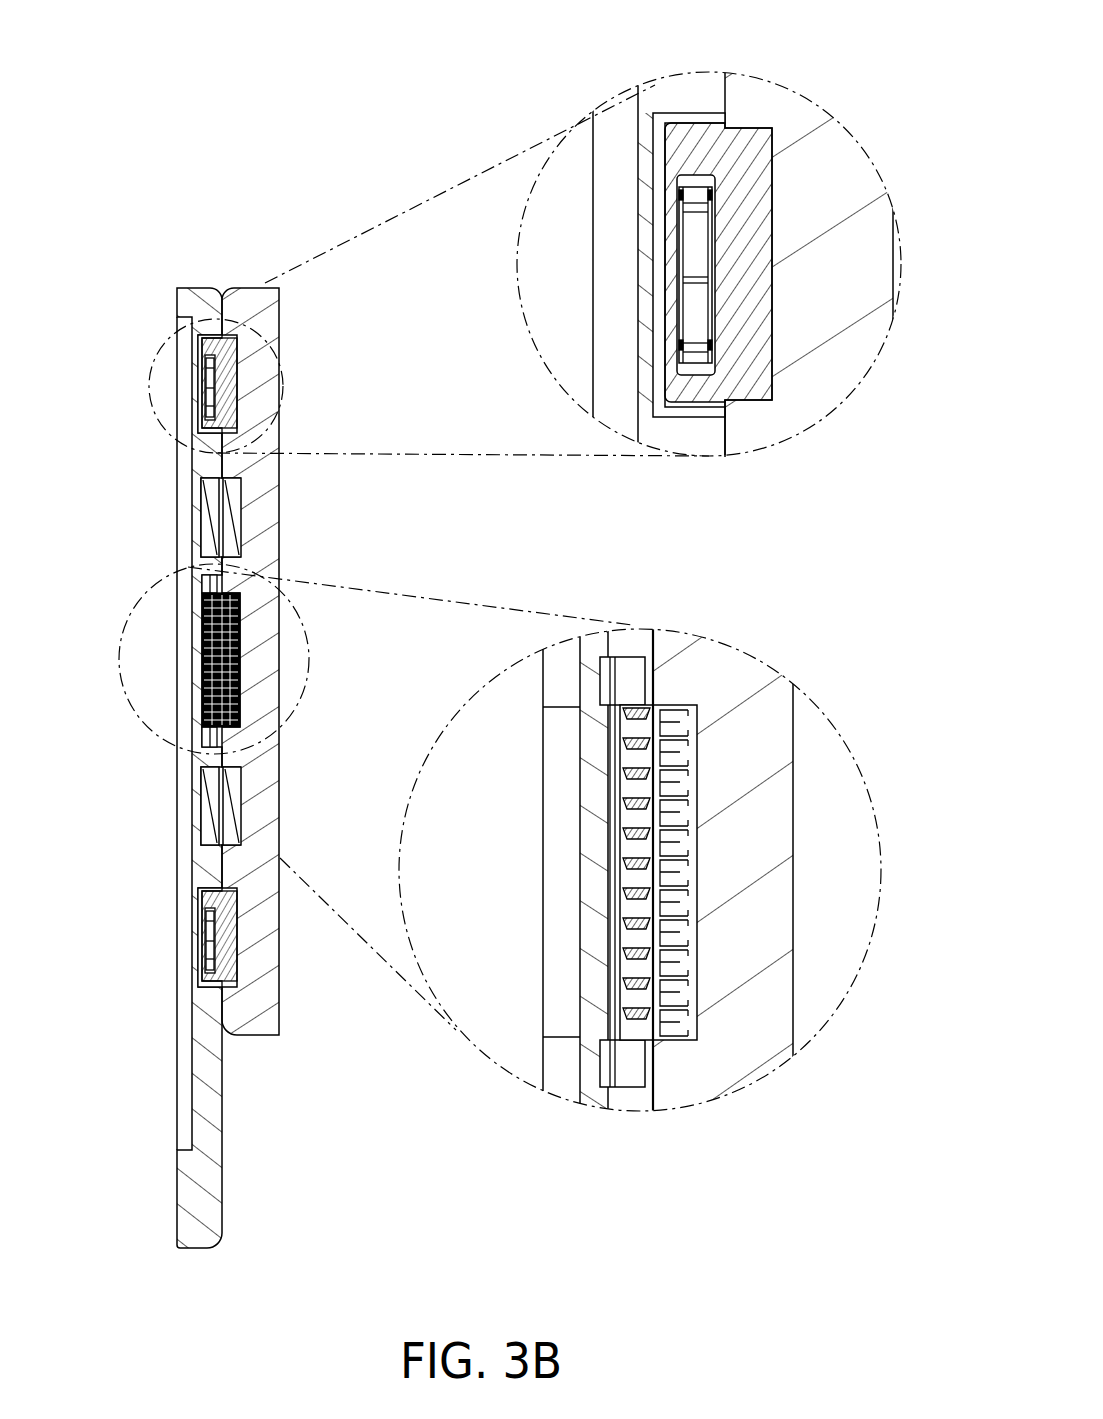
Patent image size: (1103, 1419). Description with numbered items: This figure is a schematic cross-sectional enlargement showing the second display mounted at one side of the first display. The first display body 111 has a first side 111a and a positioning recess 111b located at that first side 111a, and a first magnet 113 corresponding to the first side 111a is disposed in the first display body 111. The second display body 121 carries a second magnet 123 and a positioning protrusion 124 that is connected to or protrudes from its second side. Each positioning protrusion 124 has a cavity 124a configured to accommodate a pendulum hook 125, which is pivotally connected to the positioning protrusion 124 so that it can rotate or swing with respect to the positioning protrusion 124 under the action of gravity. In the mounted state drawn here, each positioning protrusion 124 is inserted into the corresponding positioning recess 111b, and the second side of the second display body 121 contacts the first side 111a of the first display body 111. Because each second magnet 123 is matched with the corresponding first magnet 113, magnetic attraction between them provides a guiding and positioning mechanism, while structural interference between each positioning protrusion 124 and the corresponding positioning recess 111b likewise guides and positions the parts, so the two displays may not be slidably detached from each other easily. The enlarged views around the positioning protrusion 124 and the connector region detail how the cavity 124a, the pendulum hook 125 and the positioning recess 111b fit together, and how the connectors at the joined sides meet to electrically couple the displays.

The first display body 111 is at (213, 1169).
The first side 111a is at (728, 424).
The positioning recess 111b is at (690, 408).
The first magnet 113 is at (207, 522).
The second display body 121 is at (263, 1012).
The second magnet 123 is at (240, 500).
The positioning protrusion 124 is at (697, 148).
The cavity 124a is at (695, 178).
The pendulum hook 125 is at (695, 248).